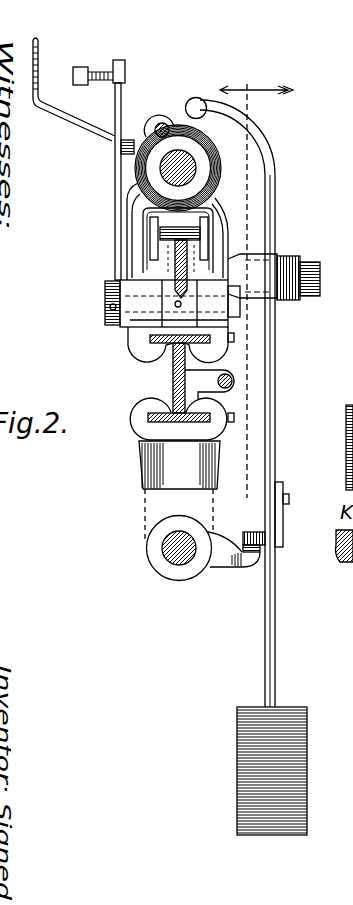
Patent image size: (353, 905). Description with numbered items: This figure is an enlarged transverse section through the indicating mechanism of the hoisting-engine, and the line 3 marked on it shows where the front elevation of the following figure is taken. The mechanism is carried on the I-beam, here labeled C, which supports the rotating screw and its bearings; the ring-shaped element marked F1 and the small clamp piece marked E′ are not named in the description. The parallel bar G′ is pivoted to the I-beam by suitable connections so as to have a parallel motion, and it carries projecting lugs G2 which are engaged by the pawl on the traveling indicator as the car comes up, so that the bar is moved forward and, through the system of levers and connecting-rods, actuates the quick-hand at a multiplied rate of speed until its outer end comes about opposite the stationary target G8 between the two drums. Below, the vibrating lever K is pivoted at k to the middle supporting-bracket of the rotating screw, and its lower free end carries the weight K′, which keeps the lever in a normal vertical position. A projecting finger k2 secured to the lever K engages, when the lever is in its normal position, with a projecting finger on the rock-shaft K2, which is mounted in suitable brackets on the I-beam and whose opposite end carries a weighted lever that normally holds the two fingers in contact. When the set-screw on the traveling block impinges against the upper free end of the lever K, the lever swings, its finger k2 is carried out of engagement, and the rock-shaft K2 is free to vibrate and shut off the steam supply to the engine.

The section line 3 is at (256, 283).
The stationary target G8 is at (43, 106).
The projecting lugs G2 is at (160, 124).
The ring bearing F1 is at (160, 168).
The parallel bar G′ is at (200, 240).
The pivot k is at (320, 280).
The I-beam rail C is at (177, 373).
The clamp pin E′ is at (235, 384).
The vibrating lever K is at (271, 370).
The rock-shaft K2 is at (147, 552).
The projecting finger k2 is at (247, 532).
The weight K′ is at (220, 562).